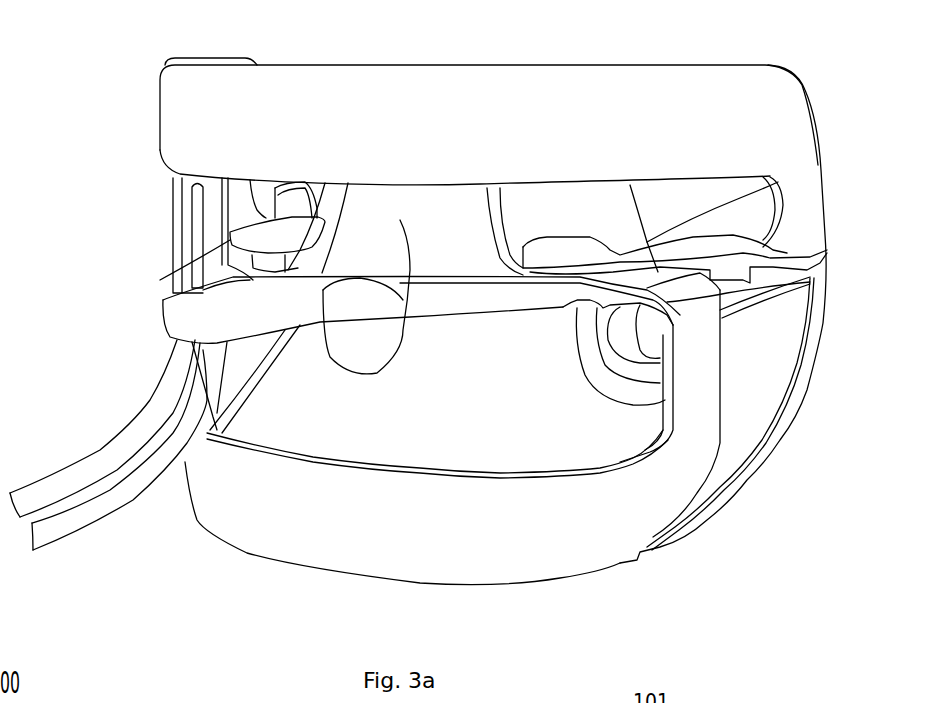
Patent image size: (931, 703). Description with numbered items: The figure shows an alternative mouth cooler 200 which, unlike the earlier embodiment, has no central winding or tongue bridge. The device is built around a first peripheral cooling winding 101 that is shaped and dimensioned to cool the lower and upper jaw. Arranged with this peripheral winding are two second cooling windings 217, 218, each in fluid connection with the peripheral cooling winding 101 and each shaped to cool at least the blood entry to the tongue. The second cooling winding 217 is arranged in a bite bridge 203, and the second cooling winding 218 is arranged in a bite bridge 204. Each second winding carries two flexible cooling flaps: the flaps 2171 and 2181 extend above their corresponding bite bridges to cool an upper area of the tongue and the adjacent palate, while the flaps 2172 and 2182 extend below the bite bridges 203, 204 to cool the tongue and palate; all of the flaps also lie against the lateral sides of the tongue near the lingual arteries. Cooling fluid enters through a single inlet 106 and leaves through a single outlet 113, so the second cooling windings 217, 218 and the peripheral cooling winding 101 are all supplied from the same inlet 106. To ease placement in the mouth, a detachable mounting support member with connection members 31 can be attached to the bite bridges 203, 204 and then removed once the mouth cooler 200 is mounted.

The mouth cooler 200 is at (121, 95).
The first peripheral cooling winding 101 is at (527, 160).
The flexible cooling flap 2181 is at (358, 203).
The flexible cooling flap 2182 is at (372, 343).
The flexible cooling flap 2171 is at (625, 233).
The flexible cooling flap 2172 is at (630, 388).
The bite bridge 203 is at (787, 253).
The second cooling winding 217 is at (810, 282).
The outlet 113 is at (173, 198).
The inlet 106 is at (193, 228).
The bite bridge 204 is at (163, 297).
The second cooling winding 218 is at (240, 323).
The connection member 31 is at (207, 337).